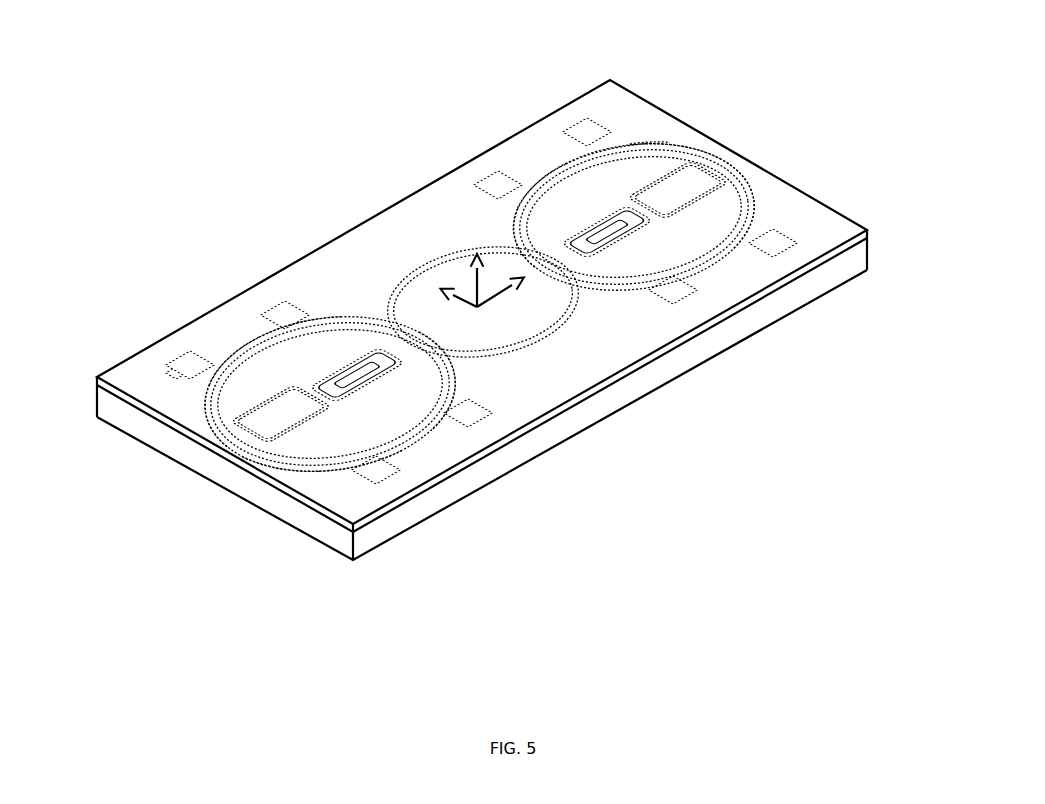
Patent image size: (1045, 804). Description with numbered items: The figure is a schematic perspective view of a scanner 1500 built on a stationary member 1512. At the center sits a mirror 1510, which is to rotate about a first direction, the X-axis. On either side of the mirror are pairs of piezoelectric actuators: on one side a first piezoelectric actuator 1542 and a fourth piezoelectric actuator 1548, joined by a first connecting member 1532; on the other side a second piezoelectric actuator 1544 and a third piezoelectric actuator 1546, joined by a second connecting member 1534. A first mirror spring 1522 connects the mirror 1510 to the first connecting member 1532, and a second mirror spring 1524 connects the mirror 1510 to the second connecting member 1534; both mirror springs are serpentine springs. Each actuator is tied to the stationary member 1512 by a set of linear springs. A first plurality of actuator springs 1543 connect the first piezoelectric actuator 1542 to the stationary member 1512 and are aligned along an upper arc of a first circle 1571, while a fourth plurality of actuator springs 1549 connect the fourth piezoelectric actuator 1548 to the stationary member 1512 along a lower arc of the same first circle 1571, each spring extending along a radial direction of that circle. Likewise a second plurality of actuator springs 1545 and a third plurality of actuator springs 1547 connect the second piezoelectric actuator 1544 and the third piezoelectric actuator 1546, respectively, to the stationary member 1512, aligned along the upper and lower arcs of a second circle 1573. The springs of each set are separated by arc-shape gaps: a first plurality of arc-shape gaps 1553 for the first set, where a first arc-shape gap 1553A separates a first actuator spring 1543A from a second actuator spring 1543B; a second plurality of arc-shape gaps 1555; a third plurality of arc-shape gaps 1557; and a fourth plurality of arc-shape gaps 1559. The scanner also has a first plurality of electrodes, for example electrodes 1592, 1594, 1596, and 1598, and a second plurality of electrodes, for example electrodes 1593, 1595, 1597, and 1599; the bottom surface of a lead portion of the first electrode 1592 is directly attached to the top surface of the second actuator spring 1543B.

The scanner 1500 is at (226, 86).
The mirror 1510 is at (512, 338).
The stationary member 1512 is at (514, 395).
The first mirror spring 1522 is at (584, 252).
The second mirror spring 1524 is at (379, 346).
The first connecting member 1532 is at (649, 228).
The second connecting member 1534 is at (344, 407).
The first piezoelectric actuator 1542 is at (556, 208).
The first plurality of actuator springs 1543 is at (646, 142).
The first actuator spring 1543A is at (628, 158).
The second actuator spring 1543B is at (594, 162).
The second piezoelectric actuator 1544 is at (262, 370).
The second plurality of actuator springs 1545 is at (333, 308).
The third piezoelectric actuator 1546 is at (349, 428).
The third plurality of actuator springs 1547 is at (319, 468).
The fourth piezoelectric actuator 1548 is at (662, 248).
The fourth plurality of actuator springs 1549 is at (726, 270).
The first plurality of arc-shape gaps 1553 is at (627, 138).
The first arc-shape gap 1553A is at (654, 162).
The second plurality of arc-shape gaps 1555 is at (218, 334).
The third plurality of arc-shape gaps 1557 is at (340, 470).
The fourth plurality of arc-shape gaps 1559 is at (768, 220).
The first circle 1571 is at (505, 222).
The second circle 1573 is at (204, 395).
The first electrode 1592 is at (585, 138).
The electrode 1593 is at (488, 185).
The electrode 1594 is at (178, 375).
The electrode 1595 is at (275, 330).
The electrode 1596 is at (375, 478).
The electrode 1597 is at (477, 417).
The electrode 1598 is at (785, 240).
The electrode 1599 is at (680, 300).